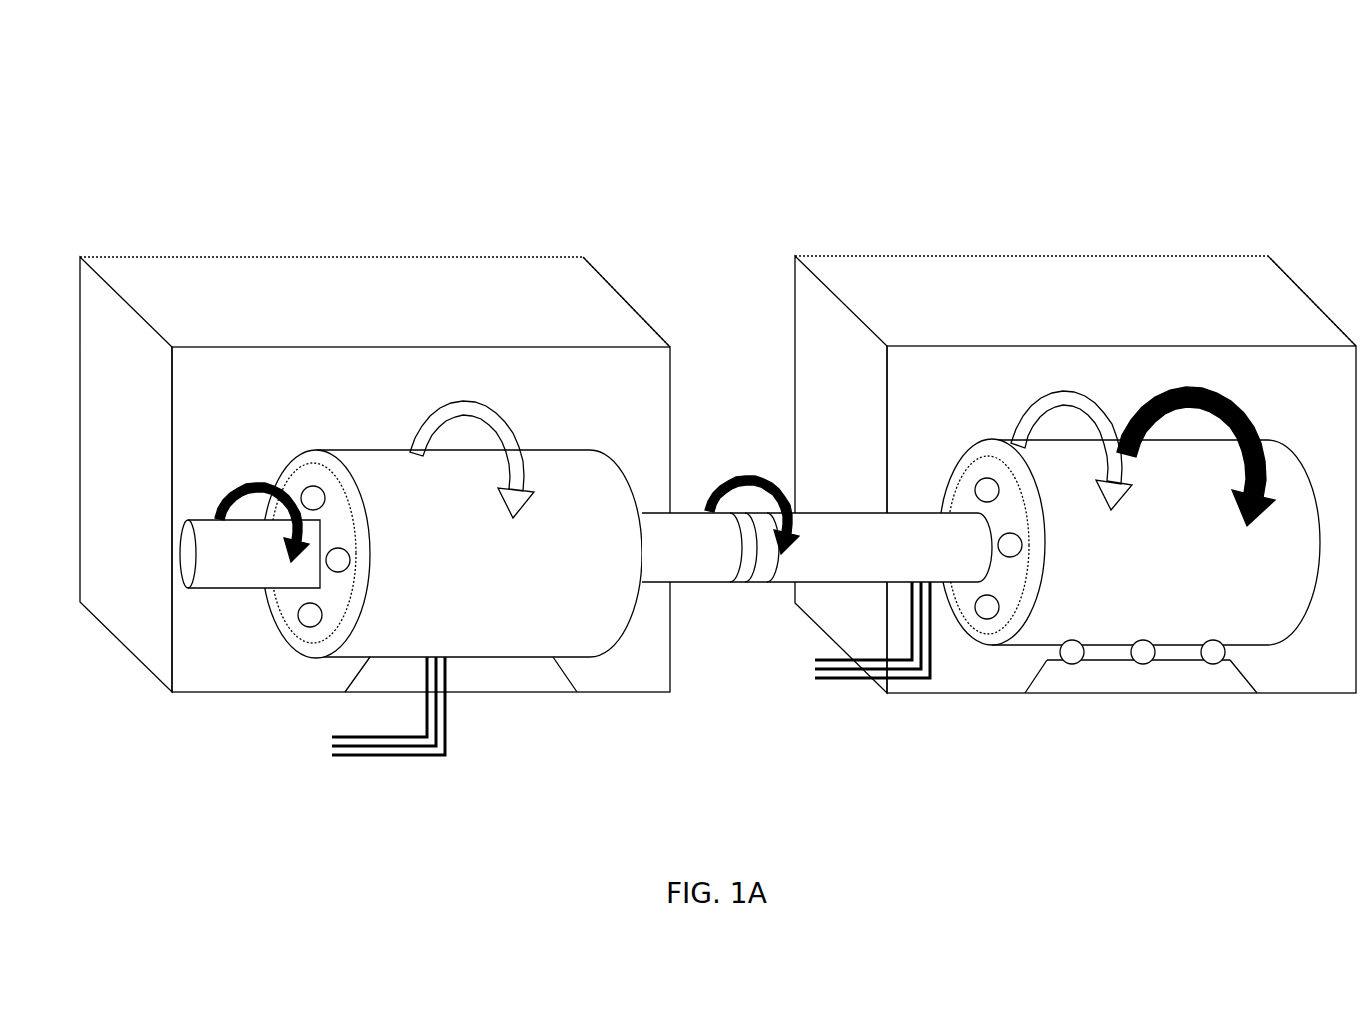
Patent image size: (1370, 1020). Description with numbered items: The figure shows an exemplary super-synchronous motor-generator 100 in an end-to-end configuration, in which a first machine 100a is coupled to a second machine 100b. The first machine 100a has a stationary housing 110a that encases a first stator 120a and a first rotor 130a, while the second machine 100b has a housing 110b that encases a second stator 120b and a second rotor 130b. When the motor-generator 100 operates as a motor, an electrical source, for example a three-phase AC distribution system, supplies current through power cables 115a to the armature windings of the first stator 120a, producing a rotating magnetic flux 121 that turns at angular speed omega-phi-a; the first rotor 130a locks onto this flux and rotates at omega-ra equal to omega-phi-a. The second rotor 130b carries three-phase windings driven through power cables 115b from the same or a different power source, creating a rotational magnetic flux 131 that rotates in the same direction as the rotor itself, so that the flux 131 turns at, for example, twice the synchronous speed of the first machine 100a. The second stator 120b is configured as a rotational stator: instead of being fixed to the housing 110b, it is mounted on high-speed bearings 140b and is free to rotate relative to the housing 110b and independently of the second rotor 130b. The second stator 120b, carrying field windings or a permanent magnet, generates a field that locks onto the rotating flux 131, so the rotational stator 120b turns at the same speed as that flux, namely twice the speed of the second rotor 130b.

The super-synchronous motor-generator 100 is at (470, 58).
The first machine 100a is at (208, 155).
The second machine 100b is at (862, 157).
The stationary housing 110a is at (172, 268).
The housing 110b is at (1032, 258).
The power cables 115a is at (384, 755).
The power cables 115b is at (843, 680).
The first stator 120a is at (548, 450).
The second stator 120b is at (1268, 440).
The rotating magnetic flux 121 is at (436, 416).
The rotational magnetic flux 131 is at (1035, 414).
The first rotor 130a is at (235, 588).
The second rotor 130b is at (825, 582).
The bearings 140b is at (1072, 665).